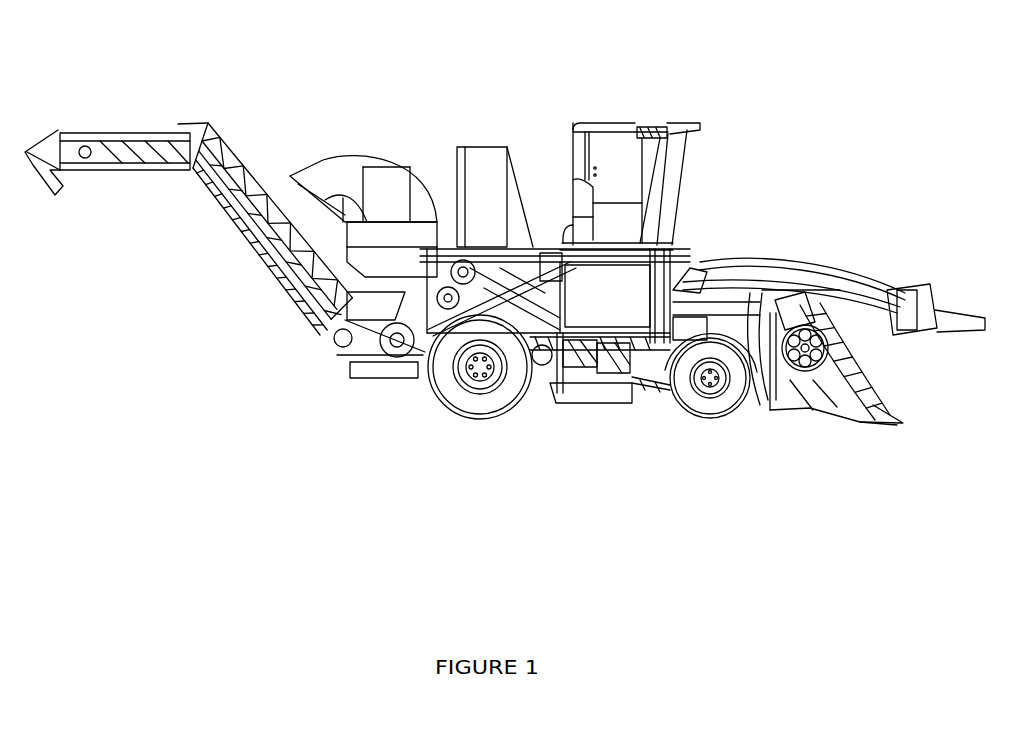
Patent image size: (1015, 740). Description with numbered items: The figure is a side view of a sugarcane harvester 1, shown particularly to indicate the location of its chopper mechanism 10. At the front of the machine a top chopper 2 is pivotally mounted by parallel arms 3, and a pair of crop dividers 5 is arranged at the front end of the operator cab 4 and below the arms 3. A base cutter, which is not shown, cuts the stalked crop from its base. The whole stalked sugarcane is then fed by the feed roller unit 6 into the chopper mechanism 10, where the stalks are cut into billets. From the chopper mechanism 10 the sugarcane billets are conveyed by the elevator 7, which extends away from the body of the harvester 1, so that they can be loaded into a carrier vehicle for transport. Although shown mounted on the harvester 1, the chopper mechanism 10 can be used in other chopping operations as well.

The sugarcane harvester 1 is at (628, 103).
The top chopper 2 is at (940, 292).
The parallel arms 3 is at (795, 260).
The operator cab 4 is at (675, 172).
The crop dividers 5 is at (863, 413).
The feed roller unit 6 is at (540, 387).
The elevator 7 is at (268, 268).
The chopper mechanism 10 is at (449, 257).